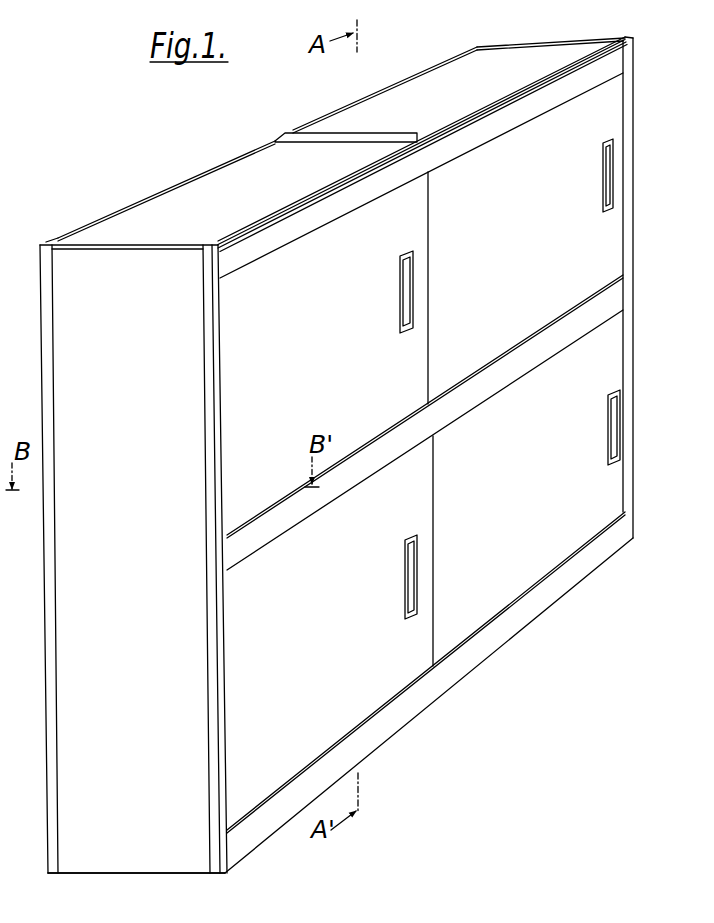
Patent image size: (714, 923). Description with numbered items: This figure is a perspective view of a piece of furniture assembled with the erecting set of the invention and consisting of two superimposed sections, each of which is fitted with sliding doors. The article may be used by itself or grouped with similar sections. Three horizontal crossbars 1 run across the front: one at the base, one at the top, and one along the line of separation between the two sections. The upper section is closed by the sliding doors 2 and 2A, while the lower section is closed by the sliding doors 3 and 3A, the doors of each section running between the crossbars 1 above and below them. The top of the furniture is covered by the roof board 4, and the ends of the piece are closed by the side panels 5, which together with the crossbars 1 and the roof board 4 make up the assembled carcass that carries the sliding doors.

The horizontal crossbar 1 is at (616, 58).
The sliding door 2 is at (605, 224).
The sliding door 2A is at (307, 247).
The sliding door 3 is at (610, 380).
The sliding door 3A is at (412, 666).
The roof board 4 is at (422, 87).
The side panel 5 is at (165, 853).